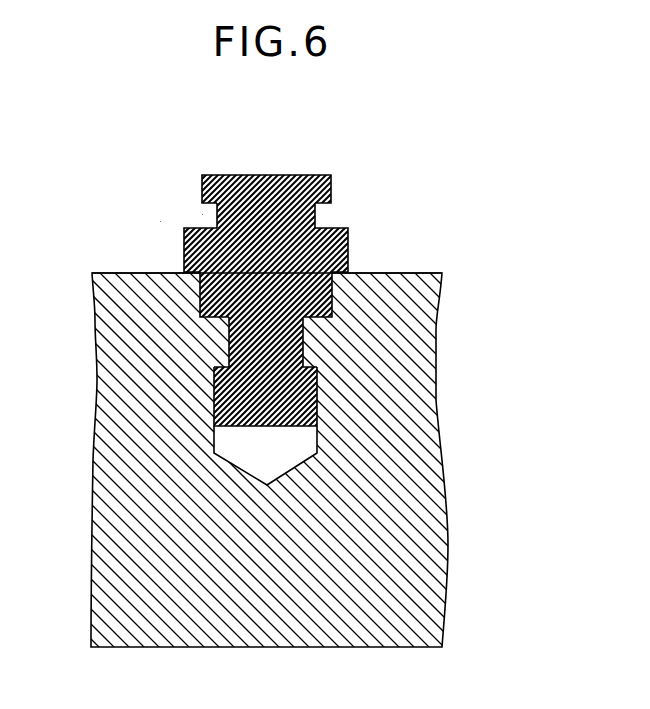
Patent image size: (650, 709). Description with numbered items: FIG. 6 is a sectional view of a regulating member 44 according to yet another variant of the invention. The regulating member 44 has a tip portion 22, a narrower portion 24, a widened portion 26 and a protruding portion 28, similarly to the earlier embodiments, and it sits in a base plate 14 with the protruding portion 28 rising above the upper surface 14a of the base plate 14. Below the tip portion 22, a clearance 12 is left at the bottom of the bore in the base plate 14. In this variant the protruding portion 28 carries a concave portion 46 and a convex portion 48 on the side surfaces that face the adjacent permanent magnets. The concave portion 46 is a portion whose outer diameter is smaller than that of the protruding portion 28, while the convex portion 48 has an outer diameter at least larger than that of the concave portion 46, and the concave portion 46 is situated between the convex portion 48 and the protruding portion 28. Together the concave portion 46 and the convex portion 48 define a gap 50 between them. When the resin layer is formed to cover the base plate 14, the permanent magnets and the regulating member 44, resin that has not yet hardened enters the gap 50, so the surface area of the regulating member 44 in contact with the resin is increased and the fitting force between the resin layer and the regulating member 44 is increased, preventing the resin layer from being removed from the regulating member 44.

The gap / clearance at bottom of bore 12 is at (216, 438).
The base plate 14 is at (433, 552).
The upper surface of base member 14a is at (131, 273).
The tip portion 22 is at (330, 378).
The narrower portion 24 is at (330, 328).
The widened portion 26 is at (333, 293).
The protruding portion 28 is at (348, 255).
The regulating member 44 is at (160, 222).
The concave portion 46 is at (315, 210).
The convex portion 48 is at (331, 183).
The gap 50 is at (202, 215).